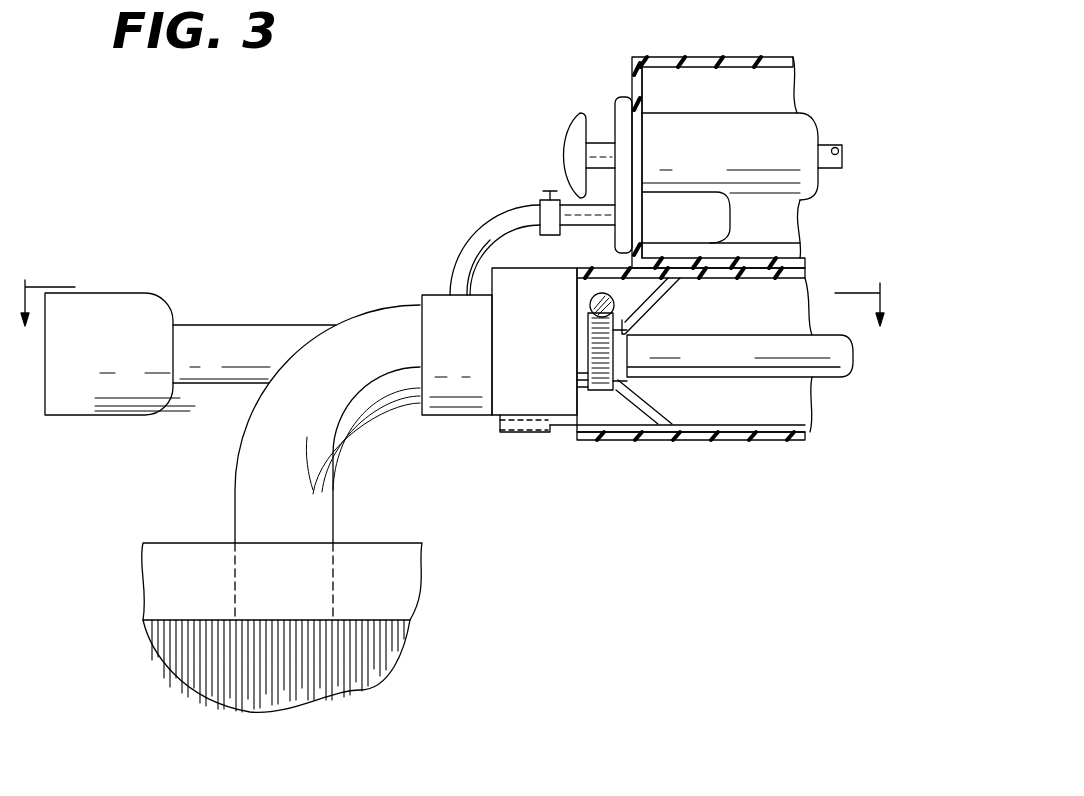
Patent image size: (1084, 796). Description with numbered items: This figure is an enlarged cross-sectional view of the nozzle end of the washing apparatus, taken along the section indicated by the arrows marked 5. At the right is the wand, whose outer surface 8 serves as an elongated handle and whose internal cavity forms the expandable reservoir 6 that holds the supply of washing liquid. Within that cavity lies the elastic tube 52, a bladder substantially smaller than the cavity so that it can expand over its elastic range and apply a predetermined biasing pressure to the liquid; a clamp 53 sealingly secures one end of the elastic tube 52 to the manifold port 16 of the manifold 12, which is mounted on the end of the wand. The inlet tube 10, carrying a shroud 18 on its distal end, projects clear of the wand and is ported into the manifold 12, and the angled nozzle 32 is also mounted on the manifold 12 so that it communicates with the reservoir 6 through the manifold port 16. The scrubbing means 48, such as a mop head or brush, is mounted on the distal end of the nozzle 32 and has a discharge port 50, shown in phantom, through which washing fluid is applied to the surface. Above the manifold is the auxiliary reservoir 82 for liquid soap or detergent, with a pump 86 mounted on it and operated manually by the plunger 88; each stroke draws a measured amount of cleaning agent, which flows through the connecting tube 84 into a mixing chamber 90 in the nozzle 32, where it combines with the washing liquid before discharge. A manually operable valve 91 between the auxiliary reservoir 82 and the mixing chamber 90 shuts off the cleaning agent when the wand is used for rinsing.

The section line 5- 5 is at (449, 323).
The expandable reservoir 6 is at (715, 403).
The outer surface 8 is at (775, 437).
The inlet tube 10 is at (226, 326).
The manifold 12 is at (514, 396).
The manifold port 16 is at (618, 388).
The shroud 18 is at (110, 294).
The nozzle 32 is at (243, 497).
The scrubbing means 48 is at (370, 652).
The discharge port 50 is at (243, 585).
The elastic tube 52 is at (845, 382).
The clamp 53 is at (590, 348).
The auxiliary reservoir 82 is at (690, 57).
The connecting tube 84 is at (458, 252).
The pump 86 is at (805, 142).
The plunger 88 is at (573, 140).
The mixing chamber 90 is at (457, 387).
The manually operable valve 91 is at (540, 207).